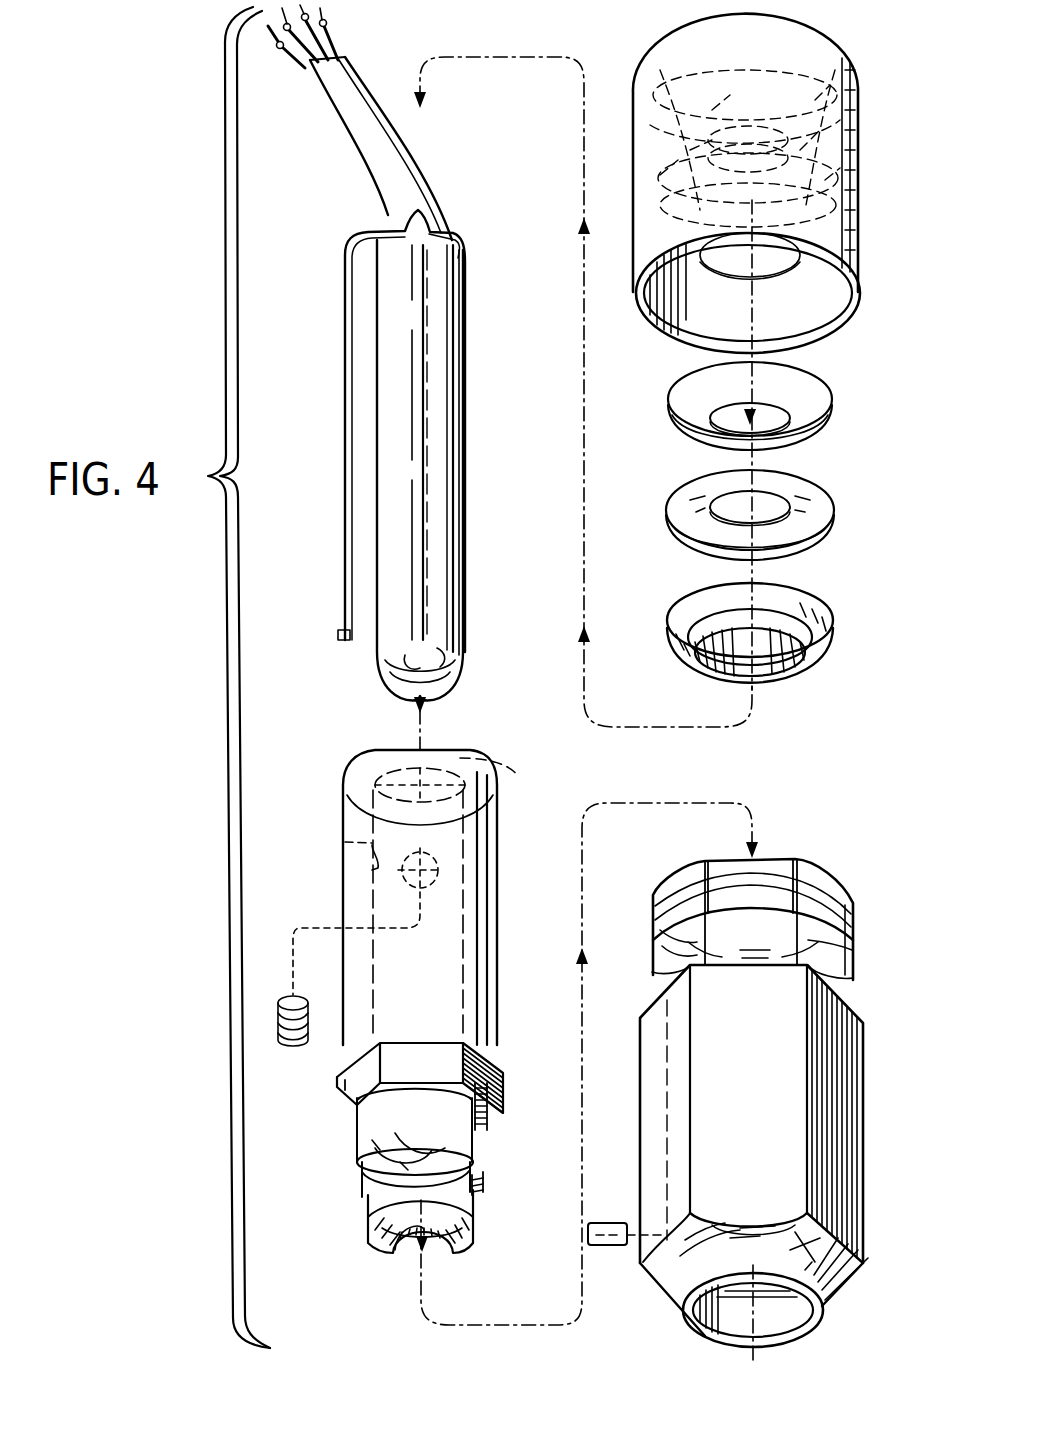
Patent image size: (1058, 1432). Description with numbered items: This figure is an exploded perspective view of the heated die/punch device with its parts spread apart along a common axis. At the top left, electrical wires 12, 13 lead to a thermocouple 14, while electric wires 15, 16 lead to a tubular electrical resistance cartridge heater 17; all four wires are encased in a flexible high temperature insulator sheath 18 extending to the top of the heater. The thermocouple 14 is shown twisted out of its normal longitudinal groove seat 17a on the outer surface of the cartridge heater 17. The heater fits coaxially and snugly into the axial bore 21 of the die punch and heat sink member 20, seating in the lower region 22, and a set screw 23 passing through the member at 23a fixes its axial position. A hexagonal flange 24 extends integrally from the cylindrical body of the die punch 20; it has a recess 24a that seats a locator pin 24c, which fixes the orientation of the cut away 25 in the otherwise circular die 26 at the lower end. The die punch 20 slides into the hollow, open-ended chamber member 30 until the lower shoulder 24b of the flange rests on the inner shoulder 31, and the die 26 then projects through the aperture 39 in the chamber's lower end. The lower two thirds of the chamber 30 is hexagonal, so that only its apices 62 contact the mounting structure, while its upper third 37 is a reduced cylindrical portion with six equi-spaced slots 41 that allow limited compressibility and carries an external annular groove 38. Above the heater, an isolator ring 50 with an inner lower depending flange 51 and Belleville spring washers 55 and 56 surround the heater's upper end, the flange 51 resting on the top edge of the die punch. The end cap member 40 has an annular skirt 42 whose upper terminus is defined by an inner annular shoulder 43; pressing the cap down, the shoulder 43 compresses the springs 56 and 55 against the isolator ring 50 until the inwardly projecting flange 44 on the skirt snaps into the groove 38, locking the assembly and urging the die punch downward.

The electrical wire 12 is at (268, 43).
The electrical wire 13 is at (285, 10).
The thermocouple 14 is at (345, 330).
The electric wire 15 is at (330, 28).
The electric wire 16 is at (322, 12).
The tubular electrical resistance cartridge heater 17 is at (440, 338).
The groove seat 17a is at (418, 424).
The flexible high temperature insulator sheath 18 is at (357, 129).
The die punch and heat sink member 20 is at (500, 882).
The axial bore 21 is at (348, 840).
The lower region 22 is at (356, 1156).
The set screw 23 is at (285, 1032).
The set screw opening 23a is at (502, 780).
The hexagonal flange 24 is at (510, 1097).
The recess 24a is at (346, 1102).
The lower shoulder 24b is at (492, 1128).
The locator pin 24c is at (597, 1221).
The cut away 25 is at (407, 1250).
The die 26 is at (467, 1243).
The chamber member 30 is at (866, 1196).
The inner shoulder 31 is at (713, 1213).
The upper cylindrical portion 37 is at (825, 962).
The annular groove 38 is at (680, 910).
The aperture 39 is at (712, 1340).
The end cap member 40 is at (861, 168).
The slots 41 is at (772, 925).
The annular skirt 42 is at (688, 300).
The inner annular shoulder 43 is at (855, 222).
The inwardly projecting flange 44 is at (800, 263).
The isolator ring 50 is at (690, 604).
The lower depending flange 51 is at (703, 678).
The Belleville spring washer 55 is at (677, 497).
The Belleville spring washer 56 is at (670, 410).
The apices 62 is at (803, 1047).